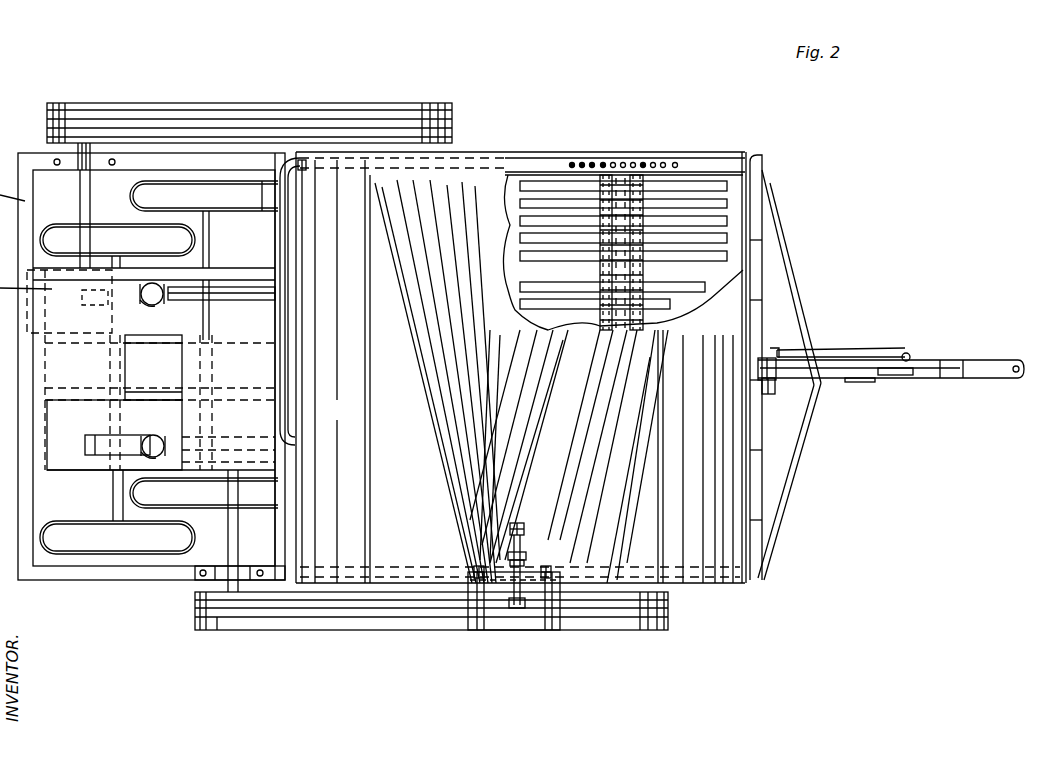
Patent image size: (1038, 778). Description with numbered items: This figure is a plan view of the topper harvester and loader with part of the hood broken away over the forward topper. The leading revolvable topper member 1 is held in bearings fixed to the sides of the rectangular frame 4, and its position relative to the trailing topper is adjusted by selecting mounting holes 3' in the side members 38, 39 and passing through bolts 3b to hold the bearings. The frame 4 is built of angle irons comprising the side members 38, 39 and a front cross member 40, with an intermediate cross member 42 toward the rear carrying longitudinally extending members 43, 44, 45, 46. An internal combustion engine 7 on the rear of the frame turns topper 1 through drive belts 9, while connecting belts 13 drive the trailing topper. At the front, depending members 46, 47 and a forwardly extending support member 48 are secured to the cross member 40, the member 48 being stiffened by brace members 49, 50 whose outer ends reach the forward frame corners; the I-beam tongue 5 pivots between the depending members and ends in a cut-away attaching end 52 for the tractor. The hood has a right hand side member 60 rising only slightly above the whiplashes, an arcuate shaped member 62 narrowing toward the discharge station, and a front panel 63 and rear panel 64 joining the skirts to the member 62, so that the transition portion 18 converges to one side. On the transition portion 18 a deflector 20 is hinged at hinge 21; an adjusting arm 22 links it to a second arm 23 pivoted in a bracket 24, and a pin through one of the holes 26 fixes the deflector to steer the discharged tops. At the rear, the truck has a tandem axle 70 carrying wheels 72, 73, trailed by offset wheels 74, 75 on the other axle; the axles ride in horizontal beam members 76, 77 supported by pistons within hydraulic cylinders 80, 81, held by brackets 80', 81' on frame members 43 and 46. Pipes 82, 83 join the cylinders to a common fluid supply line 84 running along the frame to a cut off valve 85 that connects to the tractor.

The leading revolvable topper member 1 is at (676, 183).
The mounting holes 3' is at (624, 143).
The through bolts 3b is at (645, 163).
The rectangular frame 4 is at (717, 570).
The tongue 5 is at (960, 378).
The internal combustion engine 7 is at (195, 357).
The drive belts 9 is at (433, 612).
The connecting belts 13 is at (233, 116).
The transition portion 18 is at (573, 547).
The deflector 20 is at (514, 630).
The hinge 21 is at (479, 565).
The adjusting arm 22 is at (512, 603).
The second arm 23 is at (522, 560).
The bracket 24 is at (522, 528).
The holes 26 is at (510, 555).
The side member 38 is at (676, 152).
The side member 39 is at (687, 572).
The front cross member 40 is at (753, 265).
The intermediate cross member 42 is at (287, 170).
The longitudinally extending member 43 is at (231, 272).
The longitudinally extending member 44 is at (237, 338).
The longitudinally extending member 45 is at (82, 398).
The longitudinally extending member 46 is at (779, 352).
The depending member 47 is at (772, 385).
The forwardly extending support member 48 is at (828, 368).
The brace member 49 is at (797, 288).
The brace member 50 is at (790, 480).
The forwardly extending attaching end 52 is at (985, 365).
The right hand side member 60 is at (515, 155).
The arcuate shaped member 62 is at (462, 185).
The front member or panel 63 is at (647, 543).
The rear panel 64 is at (427, 548).
The tandem axle 70 is at (212, 236).
The wheel 72 is at (262, 211).
The wheel 73 is at (248, 500).
The wheel 74 is at (100, 235).
The wheel 75 is at (75, 532).
The horizontal beam member 76 is at (108, 300).
The horizontal beam member 77 is at (108, 438).
The hydraulic cylinder 80 is at (166, 306).
The surrounding bracket 80' is at (150, 314).
The hydraulic cylinder 81 is at (160, 433).
The bracket 81' is at (142, 433).
The pipe 82 is at (238, 296).
The pipe 83 is at (232, 441).
The common fluid supply line 84 is at (301, 162).
The cut off valve 85 is at (910, 355).